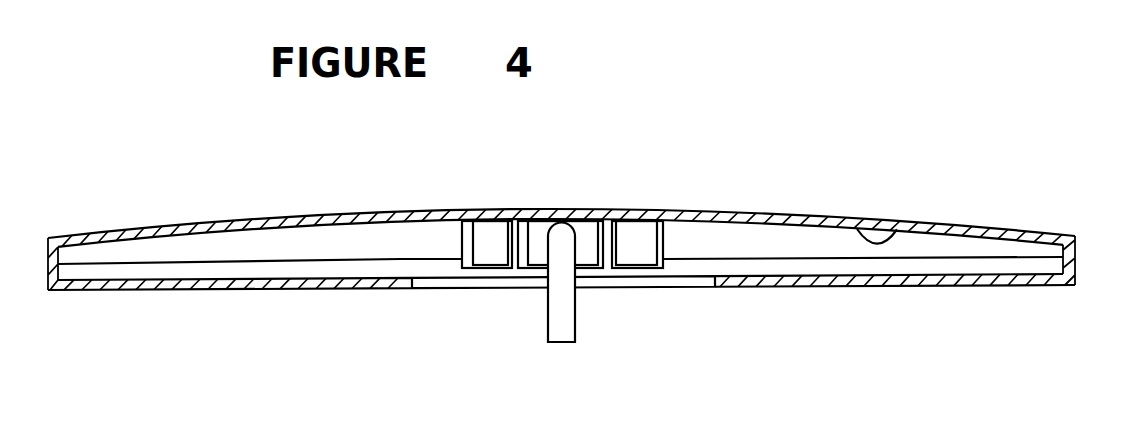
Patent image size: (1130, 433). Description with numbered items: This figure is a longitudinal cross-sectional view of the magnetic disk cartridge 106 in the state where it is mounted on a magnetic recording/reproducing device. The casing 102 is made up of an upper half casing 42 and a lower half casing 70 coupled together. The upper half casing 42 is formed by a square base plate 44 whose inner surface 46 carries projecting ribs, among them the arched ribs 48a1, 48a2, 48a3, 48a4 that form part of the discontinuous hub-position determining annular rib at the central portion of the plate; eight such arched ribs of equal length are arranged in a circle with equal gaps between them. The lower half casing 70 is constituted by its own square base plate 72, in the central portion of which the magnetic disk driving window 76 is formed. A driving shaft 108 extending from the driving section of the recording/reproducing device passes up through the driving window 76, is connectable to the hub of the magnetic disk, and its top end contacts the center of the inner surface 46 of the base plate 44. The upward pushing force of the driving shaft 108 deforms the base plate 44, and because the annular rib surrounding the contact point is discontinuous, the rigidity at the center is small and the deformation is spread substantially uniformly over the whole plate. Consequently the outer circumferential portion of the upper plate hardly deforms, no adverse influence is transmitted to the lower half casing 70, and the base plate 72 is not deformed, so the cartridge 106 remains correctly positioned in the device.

The magnetic disk cartridge 106 is at (353, 183).
The casing 102 is at (278, 363).
The upper half casing 42 is at (177, 245).
The lower half casing 70 is at (255, 289).
The base plate of the lower half casing 72 is at (835, 284).
The magnetic disk driving window 76 is at (458, 284).
The base plate of the upper half casing 44 is at (843, 215).
The inner surface of the base plate 46 is at (903, 223).
The arched rib 48a1 is at (487, 248).
The arched rib 48a2 is at (536, 247).
The arched rib 48a3 is at (588, 243).
The arched rib 48a4 is at (630, 240).
The driving shaft 108 is at (563, 318).